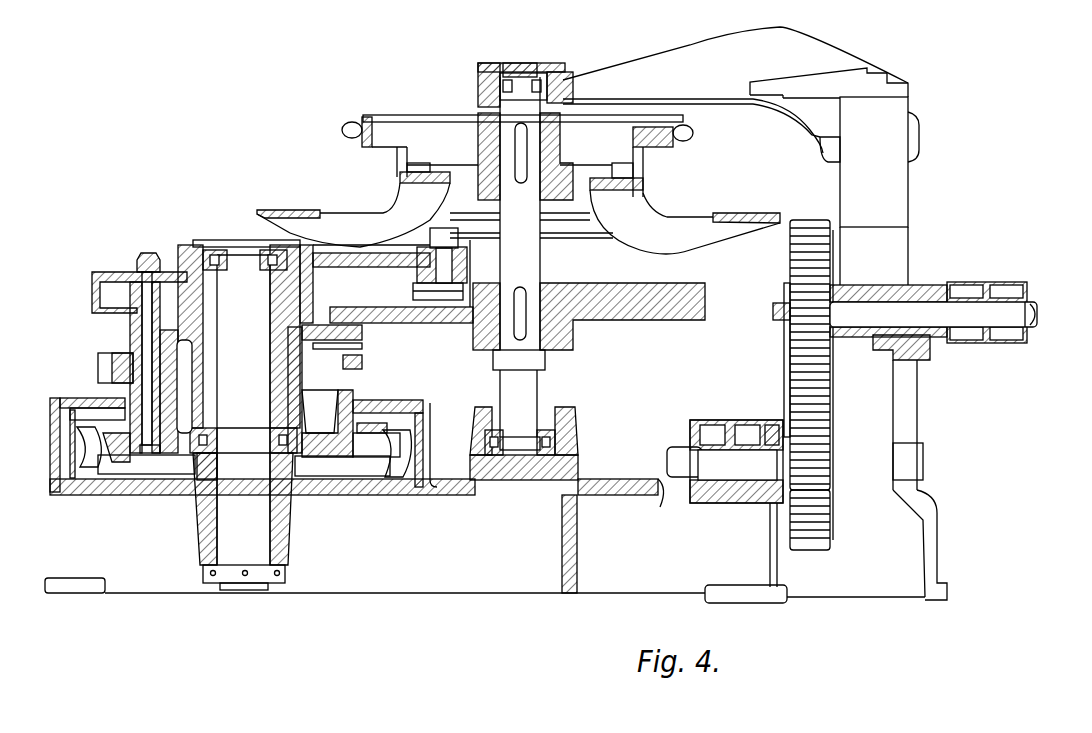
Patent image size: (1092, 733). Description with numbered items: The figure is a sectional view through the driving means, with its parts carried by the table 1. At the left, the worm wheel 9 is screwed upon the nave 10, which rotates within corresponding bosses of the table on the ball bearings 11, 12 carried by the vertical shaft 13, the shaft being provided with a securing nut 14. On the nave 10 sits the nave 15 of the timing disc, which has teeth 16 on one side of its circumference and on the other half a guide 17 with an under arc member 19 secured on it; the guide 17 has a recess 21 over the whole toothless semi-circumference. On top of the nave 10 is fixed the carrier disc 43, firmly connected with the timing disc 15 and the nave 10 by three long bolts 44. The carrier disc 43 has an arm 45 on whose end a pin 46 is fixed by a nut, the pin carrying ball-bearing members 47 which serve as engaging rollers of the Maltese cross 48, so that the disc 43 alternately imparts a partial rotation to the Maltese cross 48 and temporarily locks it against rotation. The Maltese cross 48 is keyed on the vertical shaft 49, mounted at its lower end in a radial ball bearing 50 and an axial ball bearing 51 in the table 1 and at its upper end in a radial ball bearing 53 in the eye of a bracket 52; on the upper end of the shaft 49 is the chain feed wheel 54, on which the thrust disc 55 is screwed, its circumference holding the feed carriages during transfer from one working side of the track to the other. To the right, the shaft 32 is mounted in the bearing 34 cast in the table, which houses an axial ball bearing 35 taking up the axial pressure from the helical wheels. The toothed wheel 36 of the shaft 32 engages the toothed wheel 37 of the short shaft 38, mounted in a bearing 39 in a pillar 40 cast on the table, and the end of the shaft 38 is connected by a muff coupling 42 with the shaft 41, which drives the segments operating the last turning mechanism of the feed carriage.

The table 1 is at (390, 495).
The worm wheel 9 is at (400, 470).
The nave 10 is at (318, 440).
The ball bearing 11 is at (270, 427).
The ball bearing 12 is at (197, 243).
The vertical shaft 13 is at (253, 527).
The securing nut 14 is at (283, 578).
The nave of timing disc 15 is at (130, 333).
The teeth 16 is at (102, 370).
The guide 17 is at (350, 337).
The under arc member 19 is at (353, 363).
The recess 21 is at (352, 350).
The shaft 32 is at (677, 457).
The bearing 34 is at (707, 442).
The axial ball bearing 35 is at (755, 425).
The toothed wheel 36 is at (803, 547).
The toothed wheel 37 is at (790, 350).
The short shaft 38 is at (930, 303).
The bearing 39 is at (852, 284).
The pillar 40 is at (905, 238).
The shaft 41 is at (1030, 308).
The muff coupling 42 is at (967, 287).
The carrier disc 43 is at (102, 270).
The long bolts 44 is at (145, 252).
The arm 45 is at (375, 265).
The pin 46 is at (445, 257).
The ball-bearing members 47 is at (452, 284).
The Maltese cross 48 is at (552, 292).
The vertical shaft 49 is at (530, 263).
The radial ball bearing 50 is at (568, 408).
The axial ball bearing 51 is at (507, 432).
The bracket 52 is at (637, 80).
The radial ball bearing 53 is at (537, 66).
The chain feed wheel 54 is at (373, 113).
The thrust disc 55 is at (310, 210).